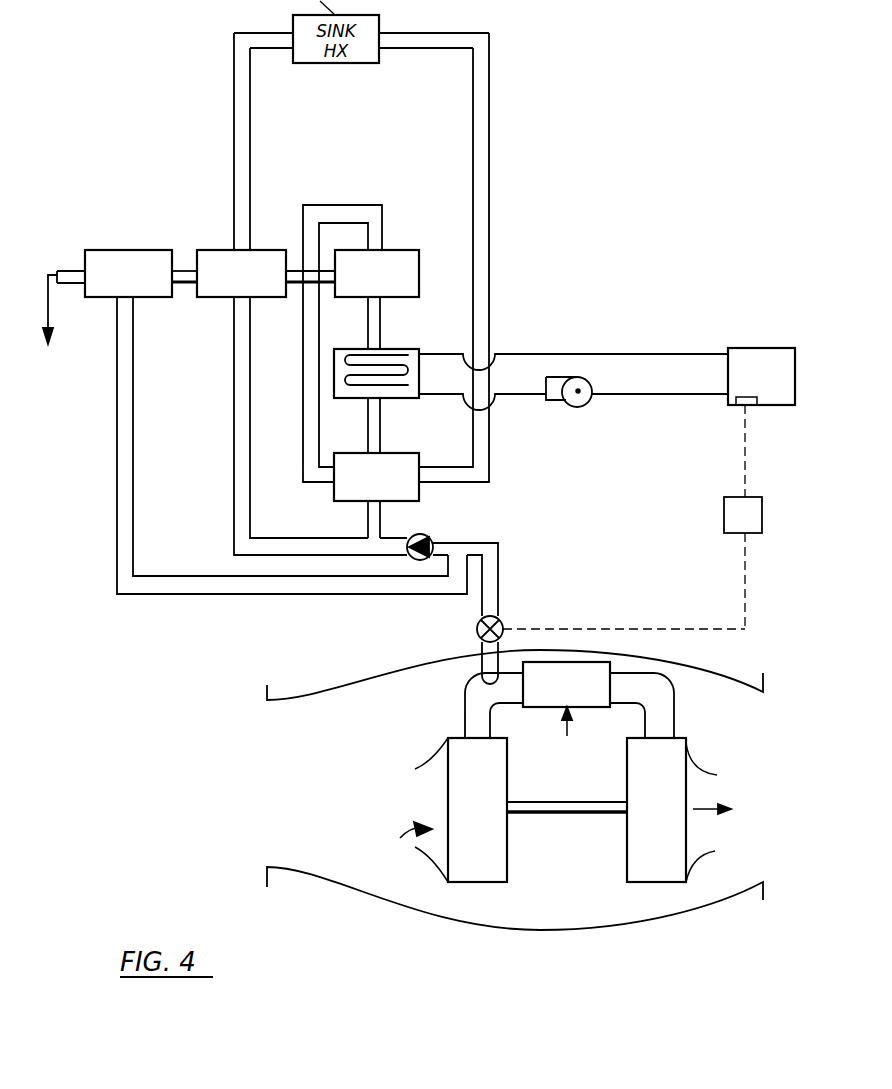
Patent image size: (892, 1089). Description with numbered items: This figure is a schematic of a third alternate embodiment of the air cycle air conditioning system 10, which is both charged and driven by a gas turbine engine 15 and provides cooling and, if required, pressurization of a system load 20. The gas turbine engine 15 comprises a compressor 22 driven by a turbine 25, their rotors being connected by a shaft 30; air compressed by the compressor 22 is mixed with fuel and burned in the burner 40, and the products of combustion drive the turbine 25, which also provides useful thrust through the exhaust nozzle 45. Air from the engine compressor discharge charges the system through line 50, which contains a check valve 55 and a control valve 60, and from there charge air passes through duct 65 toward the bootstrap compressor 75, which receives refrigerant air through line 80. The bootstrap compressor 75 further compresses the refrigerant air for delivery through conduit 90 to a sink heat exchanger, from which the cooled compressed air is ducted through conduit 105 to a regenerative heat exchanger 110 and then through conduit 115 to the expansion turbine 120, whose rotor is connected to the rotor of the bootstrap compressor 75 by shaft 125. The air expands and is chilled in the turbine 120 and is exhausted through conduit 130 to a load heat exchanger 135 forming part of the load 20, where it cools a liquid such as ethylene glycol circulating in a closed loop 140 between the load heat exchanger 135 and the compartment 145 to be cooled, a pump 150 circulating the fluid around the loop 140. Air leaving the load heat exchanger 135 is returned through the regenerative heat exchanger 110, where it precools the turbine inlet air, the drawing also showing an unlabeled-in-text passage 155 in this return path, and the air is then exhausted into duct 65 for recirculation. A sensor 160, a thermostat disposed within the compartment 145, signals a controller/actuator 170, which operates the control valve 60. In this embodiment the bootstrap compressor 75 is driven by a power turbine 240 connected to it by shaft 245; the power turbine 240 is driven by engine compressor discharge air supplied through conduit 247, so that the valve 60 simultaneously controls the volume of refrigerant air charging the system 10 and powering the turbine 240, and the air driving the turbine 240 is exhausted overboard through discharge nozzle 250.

The air conditioning system 10 is at (522, 84).
The gas turbine engine 15 is at (700, 935).
The system load 20 is at (759, 328).
The compressor 22 is at (450, 740).
The turbine 25 is at (688, 745).
The shaft 30 is at (379, 316).
The burner 40 is at (604, 665).
The exhaust nozzle 45 is at (715, 855).
The line 50 is at (487, 544).
The check valve 55 is at (430, 536).
The control valve 60 is at (503, 618).
The duct 65 is at (368, 526).
The bootstrap compressor 75 is at (266, 273).
The line 80 is at (237, 424).
The conduit 90 is at (240, 80).
The conduit 105 is at (483, 190).
The regenerative heat exchanger 110 is at (419, 463).
The conduit 115 is at (303, 378).
The expansion turbine 120 is at (410, 253).
The shaft 125 is at (298, 270).
The conduit 130 is at (372, 331).
The load heat exchanger 135 is at (340, 396).
The closed loop 140 is at (515, 353).
The compartment 145 is at (733, 354).
The pump 150 is at (588, 407).
The conduit from heat exchanger to regenerative heat exchanger 155 is at (379, 422).
The sensor 160 is at (743, 407).
The controller/actuator 170 is at (743, 517).
The power turbine 240 is at (138, 255).
The shaft 245 is at (184, 270).
The conduit 247 is at (246, 596).
The discharge nozzle 250 is at (68, 272).